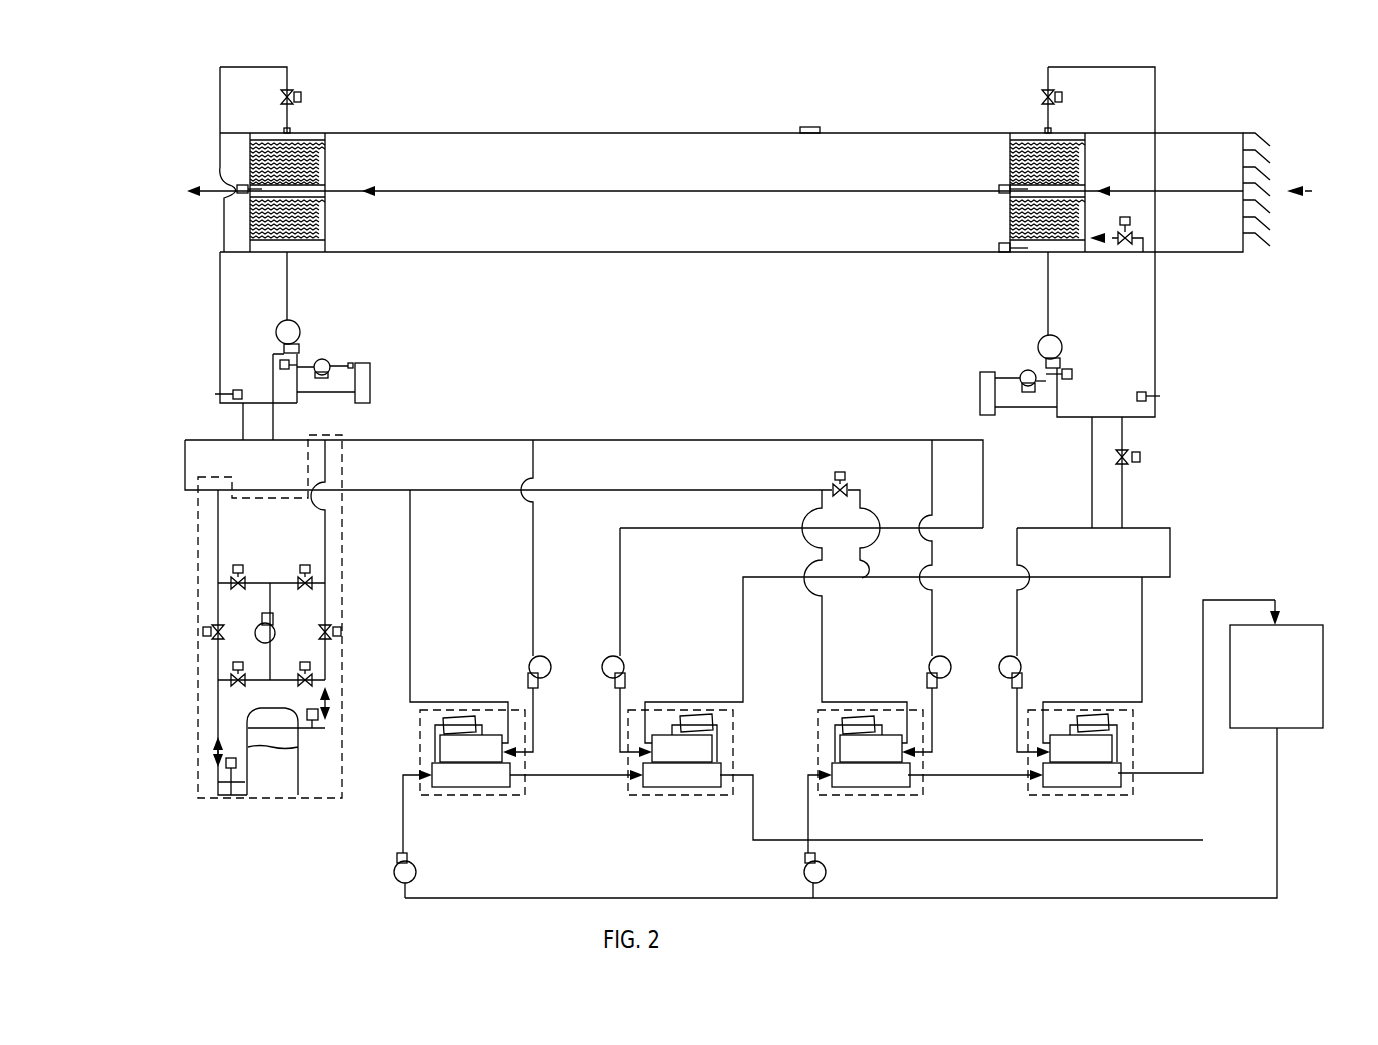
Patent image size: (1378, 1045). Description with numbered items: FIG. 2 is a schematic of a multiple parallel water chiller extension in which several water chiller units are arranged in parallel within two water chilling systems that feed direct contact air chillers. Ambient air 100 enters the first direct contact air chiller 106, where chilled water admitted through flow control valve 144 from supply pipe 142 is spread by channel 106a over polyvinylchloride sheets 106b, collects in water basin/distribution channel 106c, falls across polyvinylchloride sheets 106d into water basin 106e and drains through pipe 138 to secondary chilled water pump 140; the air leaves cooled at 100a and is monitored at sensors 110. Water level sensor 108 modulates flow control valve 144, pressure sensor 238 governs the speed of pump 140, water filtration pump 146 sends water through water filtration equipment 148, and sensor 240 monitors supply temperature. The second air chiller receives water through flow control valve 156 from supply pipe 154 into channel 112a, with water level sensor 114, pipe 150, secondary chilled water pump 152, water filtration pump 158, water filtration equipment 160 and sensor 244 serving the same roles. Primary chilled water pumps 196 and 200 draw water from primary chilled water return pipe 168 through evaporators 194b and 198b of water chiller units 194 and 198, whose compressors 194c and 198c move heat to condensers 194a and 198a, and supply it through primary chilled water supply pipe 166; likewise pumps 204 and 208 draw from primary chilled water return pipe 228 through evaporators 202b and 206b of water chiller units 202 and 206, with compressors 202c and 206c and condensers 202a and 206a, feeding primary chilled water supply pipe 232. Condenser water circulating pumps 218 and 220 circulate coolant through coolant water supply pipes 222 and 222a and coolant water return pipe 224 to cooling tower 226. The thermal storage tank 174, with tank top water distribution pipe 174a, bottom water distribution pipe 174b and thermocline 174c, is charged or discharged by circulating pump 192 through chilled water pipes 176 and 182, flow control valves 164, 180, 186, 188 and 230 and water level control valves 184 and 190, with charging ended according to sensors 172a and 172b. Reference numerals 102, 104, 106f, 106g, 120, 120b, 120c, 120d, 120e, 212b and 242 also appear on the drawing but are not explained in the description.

The ambient air 100 is at (1333, 163).
The cooled ambient air 100a is at (835, 190).
The air inlet 102 is at (1242, 135).
The duct 104 is at (1190, 135).
The direct contact air chiller 106 is at (1034, 191).
The channel 106a is at (1027, 133).
The polyvinylchloride sheets 106b is at (1023, 170).
The water basin/distribution channel 106c is at (1080, 187).
The polyvinylchloride sheets 106d is at (1012, 208).
The water basin 106e is at (1058, 252).
The drain valve line 106f is at (1143, 252).
The bottom sensor 106g is at (998, 250).
The water level sensor 108 is at (998, 187).
The sensors 110 is at (815, 127).
The channel 112a is at (312, 132).
The water level sensor 114 is at (228, 197).
The second heat exchanger 120 is at (283, 204).
The upper coil 120b is at (317, 172).
The central passage 120c is at (317, 190).
The lower coil 120d is at (253, 215).
The bottom portion 120e is at (320, 245).
The pipe 138 is at (1045, 278).
The secondary chilled water pump 140 is at (1062, 340).
The supply pipe 142 is at (1156, 330).
The flow control valve 144 is at (1048, 88).
The water filtration pump 146 is at (1027, 370).
The water filtration equipment 148 is at (991, 371).
The pipe 150 is at (288, 262).
The secondary chilled water pump 152 is at (298, 328).
The supply pipe 154 is at (220, 377).
The flow control valve 156 is at (293, 88).
The water filtration pump 158 is at (330, 363).
The water filtration equipment 160 is at (370, 378).
The flow control valve 164 is at (843, 492).
The primary chilled water supply pipe 166 is at (752, 487).
The primary chilled water return pipe 168 is at (925, 518).
The sensor 172a is at (222, 770).
The sensor 172b is at (322, 720).
The thermal storage tank 174 is at (283, 641).
The tank top water distribution pipe 174a is at (287, 738).
The water distribution pipe 174b is at (255, 797).
The boundary layer 174c is at (292, 755).
The chilled water pipe 176 is at (325, 680).
The flow control valve 180 is at (237, 684).
The chilled water pipe 182 is at (218, 665).
The water level control valve 184 is at (330, 628).
The flow control valve 186 is at (292, 590).
The flow control valve 188 is at (237, 580).
The water level control valve 190 is at (207, 628).
The chilled water thermal storage system circulating pump 192 is at (258, 618).
The water chiller unit 194 is at (508, 661).
The condenser 194a is at (508, 765).
The evaporator 194b is at (437, 737).
The compressor 194c is at (473, 716).
The primary chilled water pump 196 is at (531, 660).
The water chiller unit 198 is at (930, 743).
The condenser 198a is at (908, 765).
The evaporator 198b is at (903, 737).
The compressor 198c is at (873, 716).
The primary chilled water pump 200 is at (930, 660).
The water chiller unit 202 is at (1110, 745).
The condenser 202a is at (1121, 768).
The evaporator 202b is at (1118, 737).
The compressor 202c is at (1105, 714).
The primary chilled water pump 204 is at (1020, 660).
The water chiller unit 206 is at (710, 745).
The condenser 206a is at (721, 770).
The evaporator 206b is at (718, 737).
The compressor 206c is at (710, 714).
The primary chilled water pump 208 is at (610, 660).
The connecting line 212b is at (972, 774).
The condenser water circulating pump 218 is at (412, 860).
The condenser water circulating pump 220 is at (830, 863).
The coolant water supply pipe 222 is at (1038, 898).
The coolant water supply pipe 222a is at (575, 774).
The coolant water return pipe 224 is at (1205, 772).
The cooling tower 226 is at (1287, 623).
The primary chilled water return pipe 228 is at (1030, 527).
The flow control valve 230 is at (1142, 455).
The primary chilled water supply pipe 232 is at (1172, 558).
The pressure sensor 238 is at (1073, 371).
The sensor 240 is at (1147, 390).
The sensor 242 is at (280, 357).
The sensor 244 is at (242, 390).